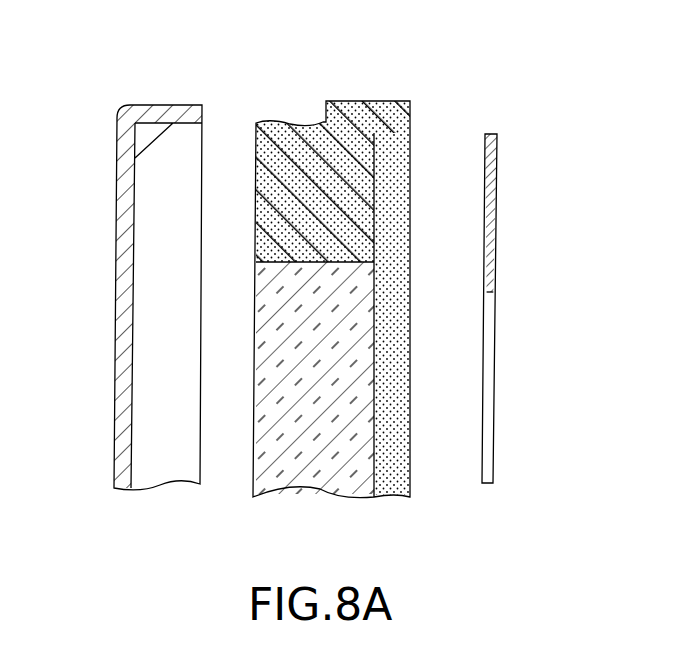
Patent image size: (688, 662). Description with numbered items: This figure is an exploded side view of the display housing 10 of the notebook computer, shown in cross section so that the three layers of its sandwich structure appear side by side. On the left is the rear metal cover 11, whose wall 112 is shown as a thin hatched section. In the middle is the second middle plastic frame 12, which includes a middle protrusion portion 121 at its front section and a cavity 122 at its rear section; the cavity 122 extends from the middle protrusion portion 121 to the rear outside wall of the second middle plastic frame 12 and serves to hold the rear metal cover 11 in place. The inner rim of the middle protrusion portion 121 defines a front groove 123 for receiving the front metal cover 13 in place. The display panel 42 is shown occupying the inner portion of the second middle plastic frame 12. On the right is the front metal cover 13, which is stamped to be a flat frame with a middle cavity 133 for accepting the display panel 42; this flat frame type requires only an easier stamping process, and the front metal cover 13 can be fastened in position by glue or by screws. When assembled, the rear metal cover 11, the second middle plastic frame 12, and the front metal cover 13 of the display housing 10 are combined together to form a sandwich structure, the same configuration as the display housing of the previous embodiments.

The display housing 10 is at (488, 35).
The rear metal cover 11 is at (125, 290).
The side wall of first member 112 is at (120, 165).
The middle protrusion portion 121 is at (148, 103).
The cavity 122 is at (278, 122).
The front groove 123 is at (375, 193).
The second middle plastic frame 12 is at (342, 271).
The display panel 42 is at (333, 333).
The front metal cover 13 is at (493, 222).
The middle cavity 133 is at (490, 365).